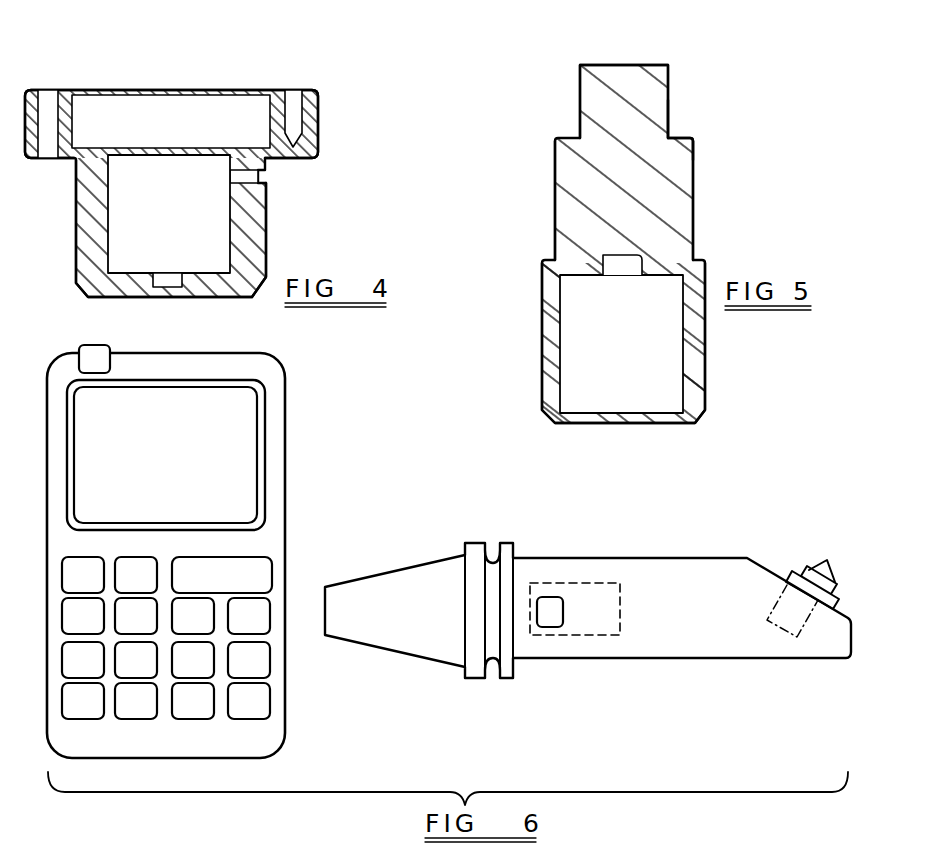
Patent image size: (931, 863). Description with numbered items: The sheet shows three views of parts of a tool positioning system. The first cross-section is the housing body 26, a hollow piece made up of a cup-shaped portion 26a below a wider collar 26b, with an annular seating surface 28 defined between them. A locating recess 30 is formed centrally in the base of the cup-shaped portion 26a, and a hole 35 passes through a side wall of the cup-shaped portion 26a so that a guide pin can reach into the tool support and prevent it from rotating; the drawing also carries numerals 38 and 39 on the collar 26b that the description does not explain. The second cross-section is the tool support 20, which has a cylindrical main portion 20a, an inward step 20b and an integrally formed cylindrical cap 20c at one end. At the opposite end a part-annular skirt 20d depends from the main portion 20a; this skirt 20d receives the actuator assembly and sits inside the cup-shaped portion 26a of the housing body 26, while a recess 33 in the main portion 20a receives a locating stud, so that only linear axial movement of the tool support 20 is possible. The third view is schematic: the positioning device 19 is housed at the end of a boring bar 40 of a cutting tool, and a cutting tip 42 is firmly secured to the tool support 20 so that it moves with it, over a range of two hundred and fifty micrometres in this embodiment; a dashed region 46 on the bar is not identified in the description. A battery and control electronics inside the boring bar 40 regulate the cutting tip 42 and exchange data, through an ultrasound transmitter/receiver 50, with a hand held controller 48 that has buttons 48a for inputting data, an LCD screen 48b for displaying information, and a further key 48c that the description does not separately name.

In FIG. 6, the positioning device 19 is at (777, 630).
In FIG. 5, the tool support 20 is at (554, 163).
In FIG. 5, the cylindrical main portion 20a is at (693, 200).
In FIG. 5, the inward step 20b is at (668, 138).
In FIG. 5, the cylindrical cap 20c is at (632, 65).
In FIG. 5, the part-annular skirt 20d is at (702, 340).
In FIG. 4, the housing body 26 is at (269, 214).
In FIG. 4, the cup-shaped portion 26a is at (267, 240).
In FIG. 4, the collar 26b is at (318, 128).
In FIG. 4, the annular seating surface 28 is at (250, 146).
In FIG. 4, the locating recess 30 is at (167, 279).
In FIG. 5, the recess 33 is at (641, 265).
In FIG. 4, the hole 35 is at (262, 176).
In FIG. 4, the bore 38 is at (293, 100).
In FIG. 4, the bore 39 is at (50, 102).
In FIG. 6, the boring bar 40 is at (680, 660).
In FIG. 6, the cutting tip 42 is at (815, 552).
In FIG. 6, the recess 46 is at (569, 606).
In FIG. 6, the hand held controller 48 is at (45, 505).
In FIG. 6, the buttons 48a is at (272, 618).
In FIG. 6, the LCD screen 48b is at (245, 426).
In FIG. 6, the send key 48c is at (258, 562).
In FIG. 6, the ultrasound transmitter/receiver 50 is at (78, 341).